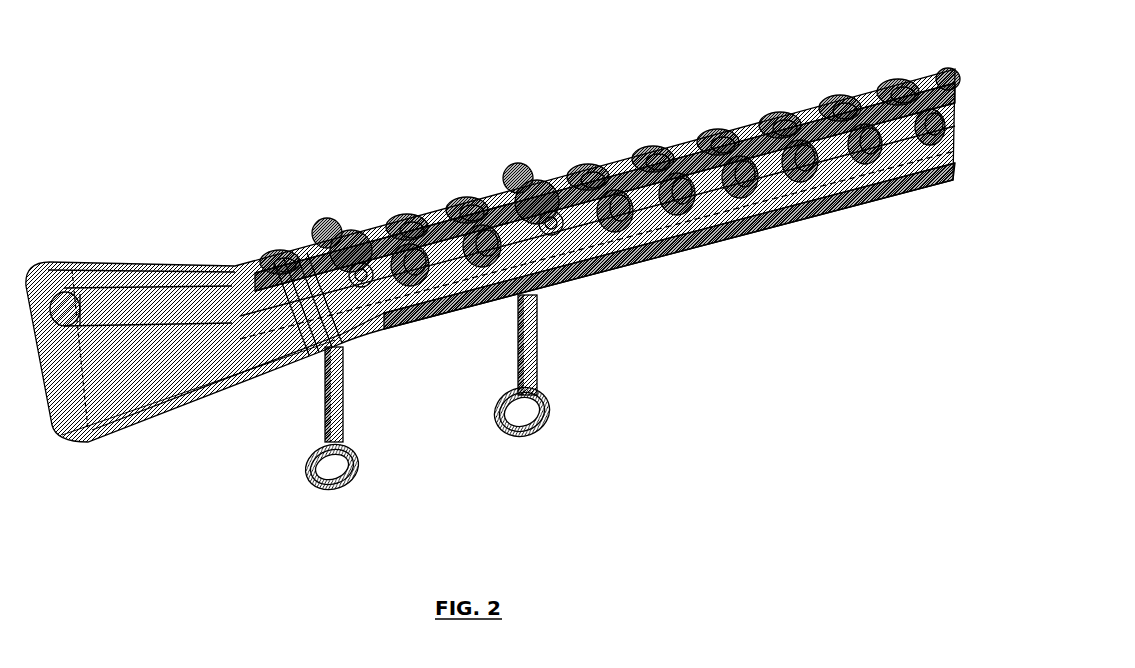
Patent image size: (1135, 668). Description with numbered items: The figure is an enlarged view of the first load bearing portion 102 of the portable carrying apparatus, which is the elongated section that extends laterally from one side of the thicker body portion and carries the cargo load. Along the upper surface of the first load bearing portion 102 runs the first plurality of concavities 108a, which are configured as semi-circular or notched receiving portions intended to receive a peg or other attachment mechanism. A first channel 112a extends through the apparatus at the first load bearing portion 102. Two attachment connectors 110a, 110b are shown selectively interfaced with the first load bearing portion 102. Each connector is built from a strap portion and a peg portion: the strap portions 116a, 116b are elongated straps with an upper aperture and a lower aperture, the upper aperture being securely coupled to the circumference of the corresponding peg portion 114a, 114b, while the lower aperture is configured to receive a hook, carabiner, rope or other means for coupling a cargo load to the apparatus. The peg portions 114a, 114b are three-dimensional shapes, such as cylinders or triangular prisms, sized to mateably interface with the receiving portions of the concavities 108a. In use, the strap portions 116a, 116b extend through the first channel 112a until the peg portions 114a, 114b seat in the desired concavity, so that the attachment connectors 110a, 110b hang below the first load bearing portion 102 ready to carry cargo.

The first load bearing portion 102 is at (493, 258).
The first plurality of concavities 108a is at (847, 82).
The attachment connector 110a is at (313, 419).
The attachment connector 110b is at (567, 376).
The first channel 112a is at (882, 108).
The peg portion 114a is at (362, 282).
The peg portion 114b is at (550, 228).
The strap portion 116a is at (334, 373).
The strap portion 116b is at (528, 323).